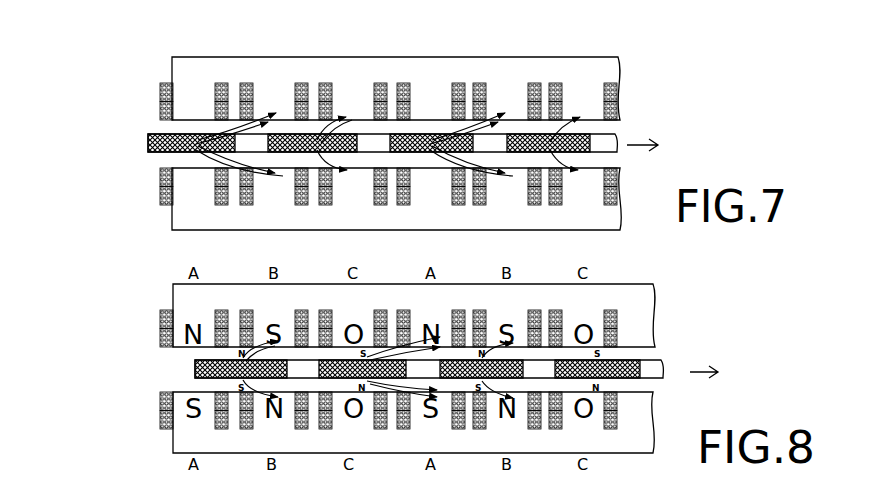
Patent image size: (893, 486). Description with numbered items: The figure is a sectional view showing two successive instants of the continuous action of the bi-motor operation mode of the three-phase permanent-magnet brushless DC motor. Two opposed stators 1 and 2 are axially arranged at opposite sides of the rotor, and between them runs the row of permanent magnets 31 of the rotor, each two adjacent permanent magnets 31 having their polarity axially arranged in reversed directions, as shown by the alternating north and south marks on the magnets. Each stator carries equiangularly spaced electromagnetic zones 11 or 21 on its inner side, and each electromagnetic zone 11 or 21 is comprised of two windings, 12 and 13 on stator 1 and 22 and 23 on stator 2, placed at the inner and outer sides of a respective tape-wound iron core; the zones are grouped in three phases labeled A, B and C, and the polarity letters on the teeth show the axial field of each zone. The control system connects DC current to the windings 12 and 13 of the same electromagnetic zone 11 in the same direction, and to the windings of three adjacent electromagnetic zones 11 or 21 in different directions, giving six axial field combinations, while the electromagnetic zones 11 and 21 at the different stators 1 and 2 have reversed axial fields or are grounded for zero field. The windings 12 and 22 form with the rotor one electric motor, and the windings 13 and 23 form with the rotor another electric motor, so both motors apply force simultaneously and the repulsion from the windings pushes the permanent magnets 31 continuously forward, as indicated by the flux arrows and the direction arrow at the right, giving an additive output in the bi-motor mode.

In FIG. 7, the stator 1 is at (192, 93).
In FIG. 7, the electromagnetic zone 11 is at (172, 67).
In FIG. 7, the winding 13 is at (160, 85).
In FIG. 8, the winding 13 is at (163, 313).
In FIG. 7, the winding 12 is at (160, 107).
In FIG. 8, the winding 12 is at (163, 340).
In FIG. 7, the permanent magnet 31 is at (148, 145).
In FIG. 7, the stator 2 is at (197, 185).
In FIG. 7, the electromagnetic zone 21 is at (193, 218).
In FIG. 7, the winding 22 is at (160, 175).
In FIG. 8, the winding 22 is at (163, 403).
In FIG. 7, the winding 23 is at (163, 200).
In FIG. 8, the winding 23 is at (163, 423).